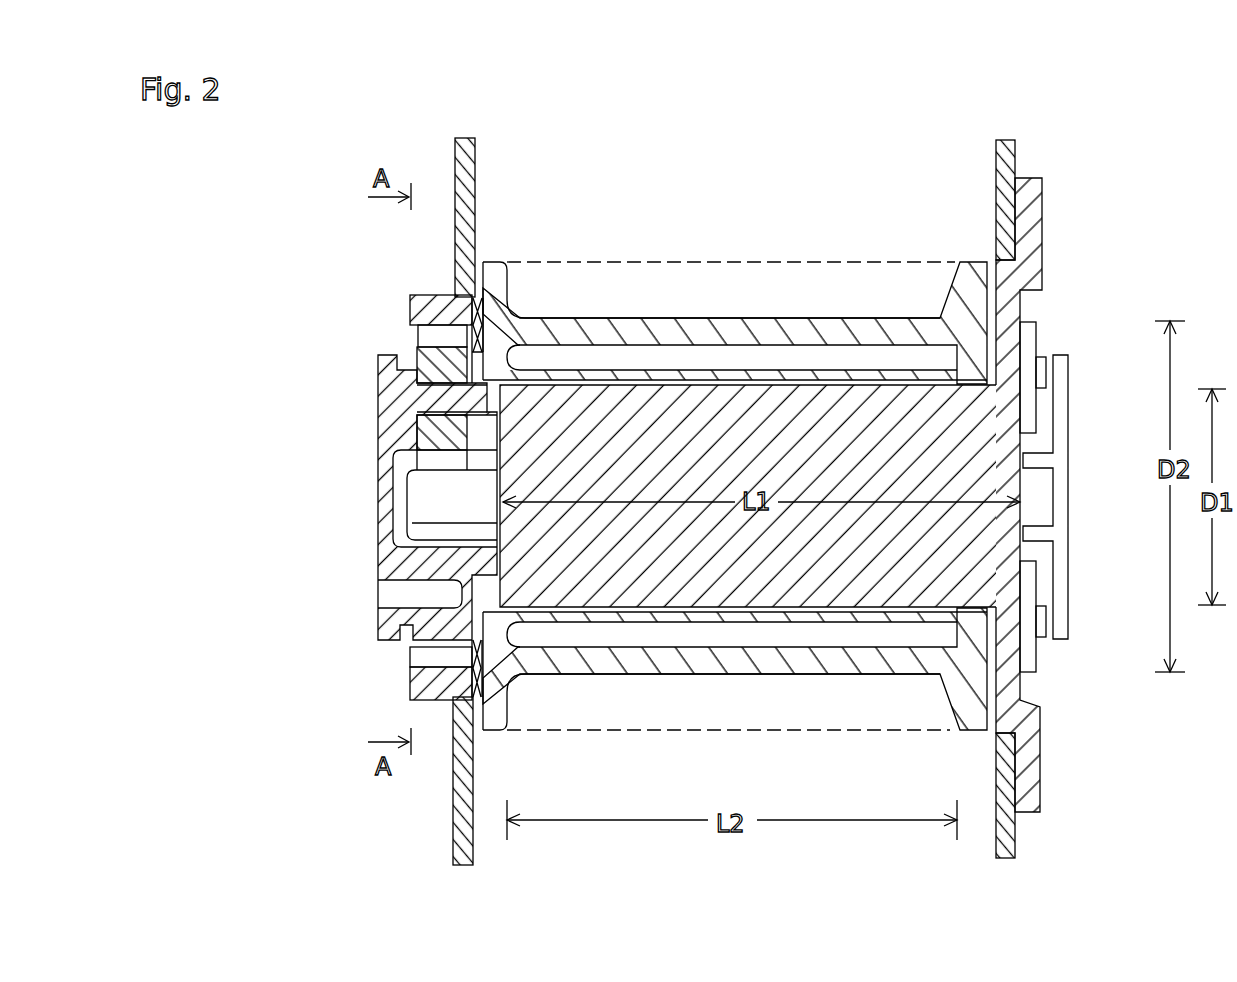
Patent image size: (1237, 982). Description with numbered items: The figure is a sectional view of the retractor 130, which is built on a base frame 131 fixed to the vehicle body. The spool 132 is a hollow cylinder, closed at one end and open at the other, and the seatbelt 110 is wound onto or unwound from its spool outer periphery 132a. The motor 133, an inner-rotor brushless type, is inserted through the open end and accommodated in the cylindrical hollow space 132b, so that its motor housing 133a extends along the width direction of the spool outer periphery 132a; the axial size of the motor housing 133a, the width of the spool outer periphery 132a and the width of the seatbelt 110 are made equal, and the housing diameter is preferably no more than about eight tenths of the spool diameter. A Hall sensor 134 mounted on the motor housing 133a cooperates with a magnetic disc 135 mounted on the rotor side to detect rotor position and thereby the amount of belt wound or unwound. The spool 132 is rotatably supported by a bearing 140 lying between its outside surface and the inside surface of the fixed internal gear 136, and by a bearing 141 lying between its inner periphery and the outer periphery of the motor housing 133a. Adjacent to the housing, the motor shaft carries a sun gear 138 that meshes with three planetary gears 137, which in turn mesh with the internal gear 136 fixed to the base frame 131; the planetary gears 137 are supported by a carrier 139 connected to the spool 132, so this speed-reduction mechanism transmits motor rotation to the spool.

The seatbelt 110 is at (613, 283).
The retractor 130 is at (917, 137).
The base frame 131 is at (470, 152).
The spool 132 is at (852, 318).
The spool outer periphery 132a is at (688, 318).
The hollow space 132b is at (780, 380).
The motor 133 is at (1042, 280).
The motor housing 133a is at (905, 395).
The Hall sensor 134 is at (1042, 378).
The magnetic disc 135 is at (1062, 410).
The internal gear 136 is at (410, 296).
The planetary gears 137 is at (417, 352).
The sun gear 138 is at (430, 503).
The carrier 139 is at (378, 402).
The bearing 140 is at (480, 300).
The bearing 141 is at (1022, 352).